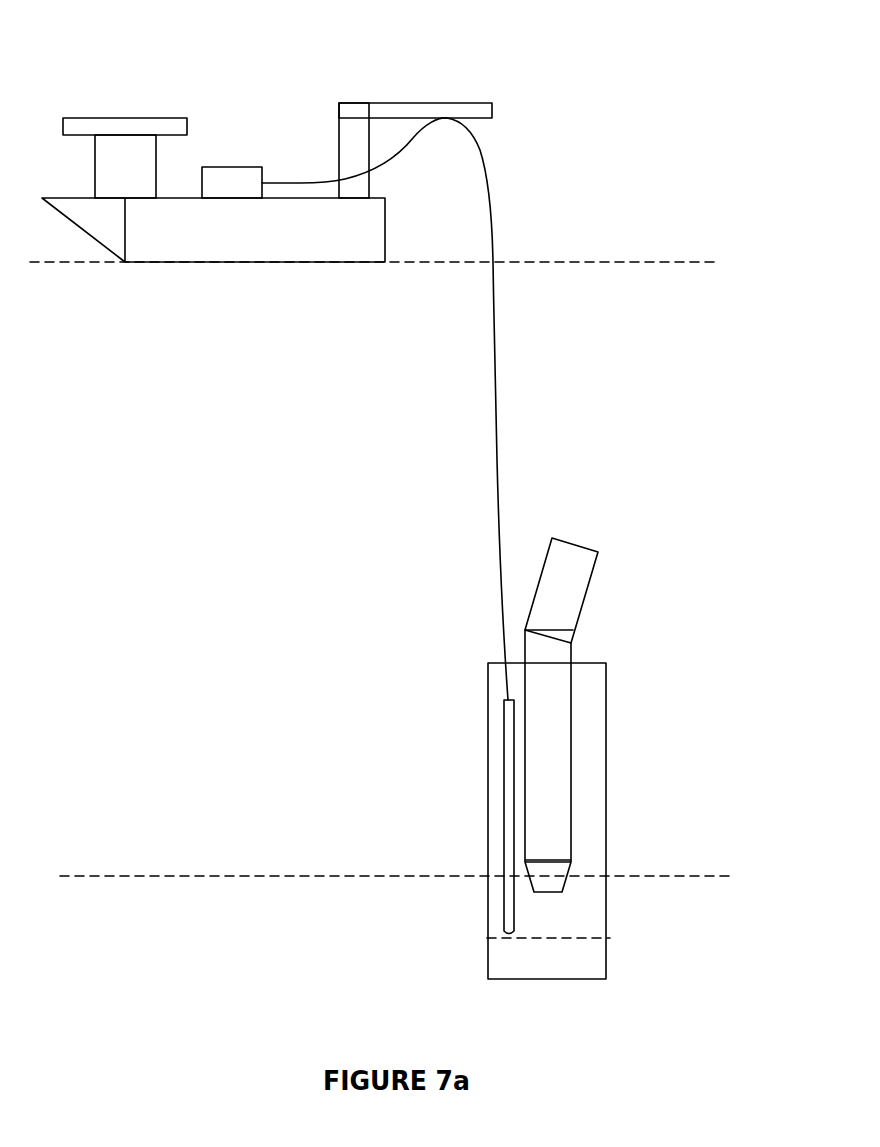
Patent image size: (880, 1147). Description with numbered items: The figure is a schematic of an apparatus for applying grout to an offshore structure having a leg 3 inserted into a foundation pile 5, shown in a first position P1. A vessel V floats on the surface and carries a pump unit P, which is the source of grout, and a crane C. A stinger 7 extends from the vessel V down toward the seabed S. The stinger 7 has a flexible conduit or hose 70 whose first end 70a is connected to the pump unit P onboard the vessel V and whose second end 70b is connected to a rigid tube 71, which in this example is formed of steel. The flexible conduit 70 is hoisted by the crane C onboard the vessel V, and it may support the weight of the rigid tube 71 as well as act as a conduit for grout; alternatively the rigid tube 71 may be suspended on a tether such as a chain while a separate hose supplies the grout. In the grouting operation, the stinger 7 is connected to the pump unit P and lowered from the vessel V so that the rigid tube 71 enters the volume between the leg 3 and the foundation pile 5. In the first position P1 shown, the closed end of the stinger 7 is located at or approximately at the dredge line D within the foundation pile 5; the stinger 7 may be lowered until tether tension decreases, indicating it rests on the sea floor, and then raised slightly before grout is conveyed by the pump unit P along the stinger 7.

The vessel V is at (251, 238).
The pump unit P is at (230, 167).
The crane C is at (478, 103).
The seabed S is at (263, 872).
The stinger 7 is at (449, 497).
The flexible conduit 70 is at (497, 460).
The first end 70a is at (264, 178).
The second end 70b is at (506, 700).
The rigid tube 71 is at (504, 792).
The leg 3 is at (590, 613).
The foundation pile 5 is at (606, 792).
The dredge line D is at (590, 937).
The first position P1 is at (510, 904).